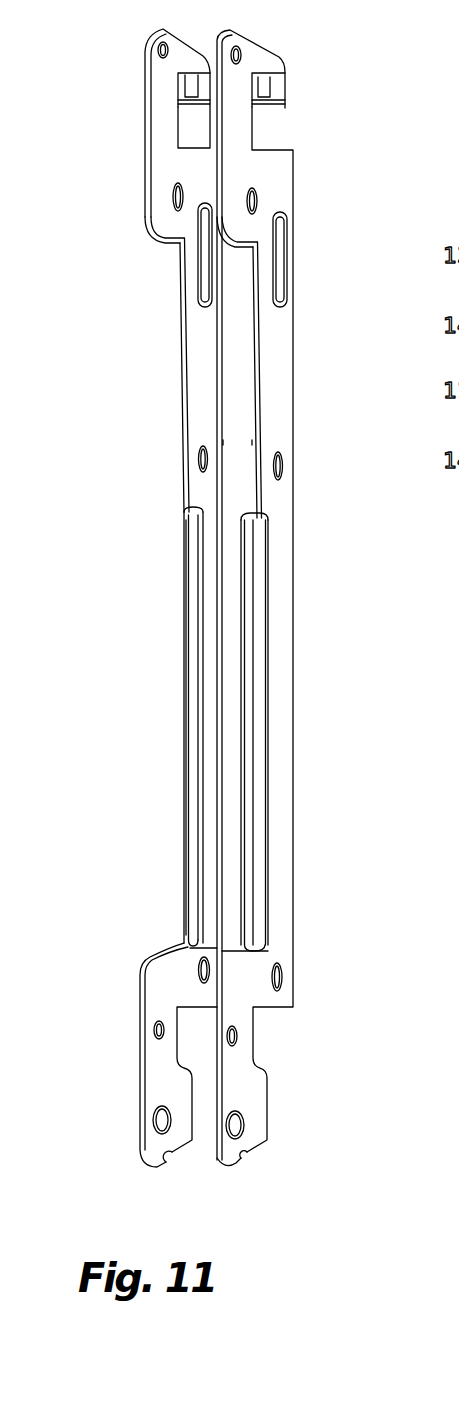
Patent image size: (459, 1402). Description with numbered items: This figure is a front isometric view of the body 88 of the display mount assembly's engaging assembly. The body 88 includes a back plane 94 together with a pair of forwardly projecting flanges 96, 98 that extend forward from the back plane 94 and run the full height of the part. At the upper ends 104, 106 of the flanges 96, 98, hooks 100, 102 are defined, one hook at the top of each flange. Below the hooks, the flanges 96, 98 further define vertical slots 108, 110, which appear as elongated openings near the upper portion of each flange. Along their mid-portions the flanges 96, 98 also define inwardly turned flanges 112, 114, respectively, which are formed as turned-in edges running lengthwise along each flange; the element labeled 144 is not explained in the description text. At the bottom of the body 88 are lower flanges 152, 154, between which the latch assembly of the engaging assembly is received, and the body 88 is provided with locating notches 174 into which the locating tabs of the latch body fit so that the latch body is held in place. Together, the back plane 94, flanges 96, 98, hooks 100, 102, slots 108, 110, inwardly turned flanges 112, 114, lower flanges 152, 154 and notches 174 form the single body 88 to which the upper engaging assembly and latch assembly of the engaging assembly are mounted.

The body 88 is at (170, 963).
The back plane 94 is at (252, 433).
The forwardly projecting flange 96 is at (195, 432).
The forwardly projecting flange 98 is at (277, 570).
The hook 100 is at (203, 75).
The hook 102 is at (273, 78).
The upper end 104 is at (160, 80).
The upper end 106 is at (280, 53).
The vertical slot 108 is at (208, 267).
The vertical slot 110 is at (282, 282).
The inwardly turned flange 112 is at (195, 660).
The inwardly turned flange 114 is at (252, 682).
The first rib 144 is at (227, 583).
The lower flange 152 is at (240, 1102).
The lower flange 154 is at (163, 1098).
The locating notch 174 is at (168, 1153).